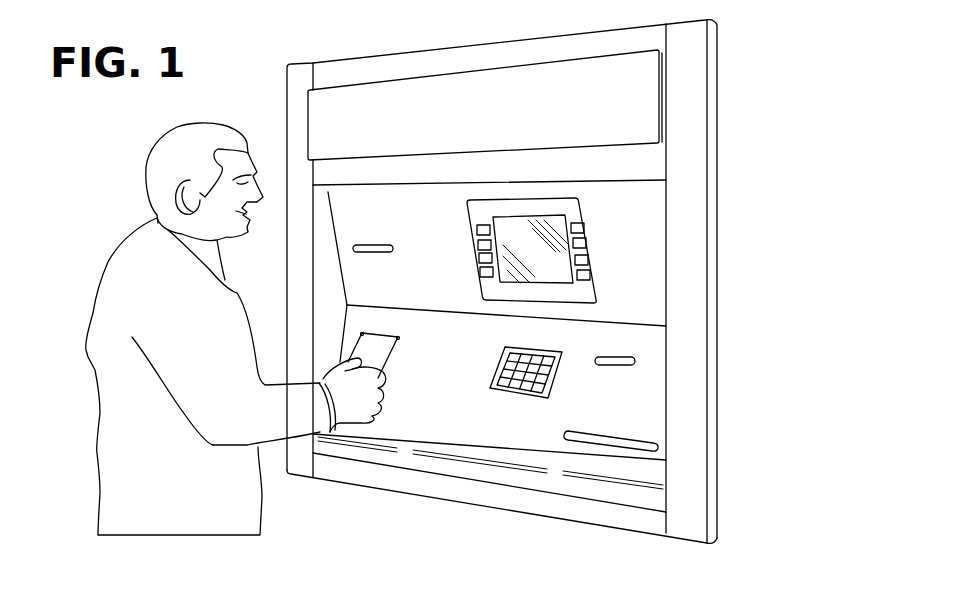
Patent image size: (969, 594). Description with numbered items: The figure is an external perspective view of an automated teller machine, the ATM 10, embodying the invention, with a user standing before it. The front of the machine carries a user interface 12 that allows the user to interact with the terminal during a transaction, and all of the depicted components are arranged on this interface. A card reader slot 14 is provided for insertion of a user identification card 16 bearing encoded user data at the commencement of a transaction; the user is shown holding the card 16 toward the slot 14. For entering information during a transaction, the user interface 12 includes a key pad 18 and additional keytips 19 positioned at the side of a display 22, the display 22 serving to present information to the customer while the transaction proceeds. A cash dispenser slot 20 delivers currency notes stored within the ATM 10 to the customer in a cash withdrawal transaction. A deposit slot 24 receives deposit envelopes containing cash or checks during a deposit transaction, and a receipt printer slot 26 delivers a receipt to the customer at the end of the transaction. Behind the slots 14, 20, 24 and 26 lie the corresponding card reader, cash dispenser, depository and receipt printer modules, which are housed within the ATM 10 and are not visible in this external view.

The automated teller machine 10 is at (764, 38).
The user interface 12 is at (636, 290).
The card reader slot 14 is at (399, 337).
The user identification card 16 is at (376, 349).
The key pad 18 is at (510, 388).
The keytips 19 is at (485, 270).
The cash dispenser slot 20 is at (610, 365).
The display 22 is at (507, 230).
The deposit slot 24 is at (656, 447).
The receipt printer slot 26 is at (372, 252).